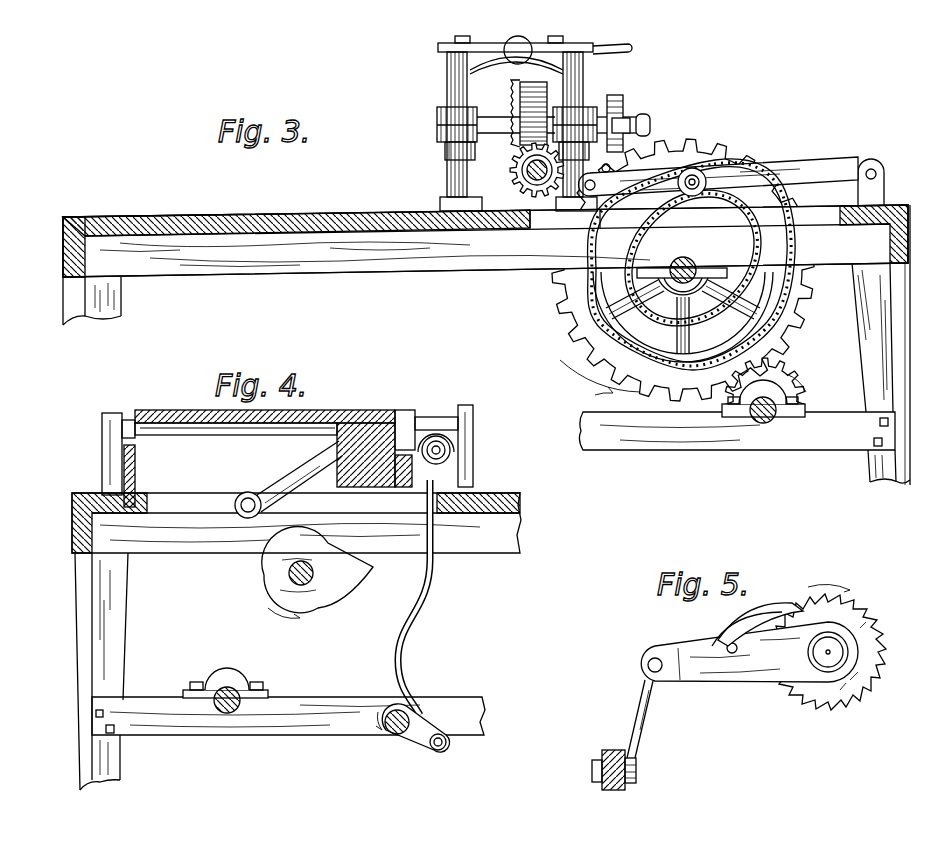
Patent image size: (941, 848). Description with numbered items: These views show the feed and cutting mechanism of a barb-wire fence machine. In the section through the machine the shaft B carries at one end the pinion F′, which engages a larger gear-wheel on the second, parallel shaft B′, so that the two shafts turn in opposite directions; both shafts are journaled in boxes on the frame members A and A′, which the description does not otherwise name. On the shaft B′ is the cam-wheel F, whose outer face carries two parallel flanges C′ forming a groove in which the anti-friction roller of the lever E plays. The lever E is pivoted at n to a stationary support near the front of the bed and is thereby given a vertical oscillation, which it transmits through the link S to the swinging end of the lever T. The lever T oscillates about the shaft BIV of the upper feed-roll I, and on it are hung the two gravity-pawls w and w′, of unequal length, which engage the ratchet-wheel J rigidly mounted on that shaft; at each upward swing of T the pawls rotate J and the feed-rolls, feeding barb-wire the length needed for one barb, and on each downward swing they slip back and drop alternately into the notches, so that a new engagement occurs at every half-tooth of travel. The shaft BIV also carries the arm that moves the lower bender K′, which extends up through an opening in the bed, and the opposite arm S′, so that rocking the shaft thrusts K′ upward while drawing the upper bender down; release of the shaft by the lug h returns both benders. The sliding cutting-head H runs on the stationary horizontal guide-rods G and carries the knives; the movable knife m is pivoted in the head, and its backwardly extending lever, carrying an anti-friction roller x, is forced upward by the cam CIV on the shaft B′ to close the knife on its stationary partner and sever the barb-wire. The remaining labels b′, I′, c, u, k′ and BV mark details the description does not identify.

In FIG. 3, the main frame beam A is at (486, 345).
In FIG. 3, the lower frame beam A′ is at (737, 431).
In FIG. 3, the pivot n is at (878, 181).
In FIG. 3, the vertically-reciprocating lever E is at (719, 176).
In FIG. 5, the vertically-reciprocating lever E is at (610, 752).
In FIG. 3, the lower bender K′ is at (534, 123).
In FIG. 3, the shaft of the upper feed-roll BIV is at (511, 124).
In FIG. 5, the shaft of the upper feed-roll BIV is at (880, 652).
In FIG. 3, the upper feed-roll I is at (533, 105).
In FIG. 3, the ratchet-wheel J is at (615, 114).
In FIG. 5, the ratchet-wheel J is at (828, 647).
In FIG. 3, the lever T is at (621, 126).
In FIG. 5, the lever T is at (749, 652).
In FIG. 3, the lug h is at (508, 172).
In FIG. 3, the pin b′ is at (606, 160).
In FIG. 3, the cam-wheel F is at (683, 317).
In FIG. 3, the parallel flanges C′ is at (738, 330).
In FIG. 3, the second shaft B′ is at (682, 272).
In FIG. 4, the second shaft B′ is at (272, 577).
In FIG. 3, the eccentric strap I′ is at (796, 246).
In FIG. 3, the pinion F′ is at (769, 398).
In FIG. 3, the shaft B is at (775, 418).
In FIG. 4, the shaft B is at (226, 688).
In FIG. 4, the anti-friction rollers x is at (296, 634).
In FIG. 4, the post c is at (287, 441).
In FIG. 4, the cutting-head H is at (345, 406).
In FIG. 4, the bolt u is at (136, 466).
In FIG. 4, the movable knife m is at (398, 412).
In FIG. 4, the guide-rods G is at (436, 414).
In FIG. 4, the arm S′ is at (299, 476).
In FIG. 4, the cam CIV is at (317, 573).
In FIG. 4, the connecting rod k′ is at (434, 568).
In FIG. 4, the crank BV is at (395, 745).
In FIG. 5, the gravity-pawl w is at (760, 619).
In FIG. 5, the gravity-pawl w′ is at (747, 625).
In FIG. 5, the link S is at (643, 719).